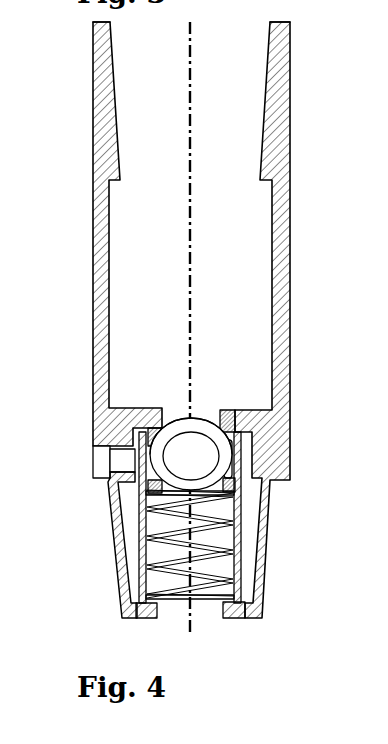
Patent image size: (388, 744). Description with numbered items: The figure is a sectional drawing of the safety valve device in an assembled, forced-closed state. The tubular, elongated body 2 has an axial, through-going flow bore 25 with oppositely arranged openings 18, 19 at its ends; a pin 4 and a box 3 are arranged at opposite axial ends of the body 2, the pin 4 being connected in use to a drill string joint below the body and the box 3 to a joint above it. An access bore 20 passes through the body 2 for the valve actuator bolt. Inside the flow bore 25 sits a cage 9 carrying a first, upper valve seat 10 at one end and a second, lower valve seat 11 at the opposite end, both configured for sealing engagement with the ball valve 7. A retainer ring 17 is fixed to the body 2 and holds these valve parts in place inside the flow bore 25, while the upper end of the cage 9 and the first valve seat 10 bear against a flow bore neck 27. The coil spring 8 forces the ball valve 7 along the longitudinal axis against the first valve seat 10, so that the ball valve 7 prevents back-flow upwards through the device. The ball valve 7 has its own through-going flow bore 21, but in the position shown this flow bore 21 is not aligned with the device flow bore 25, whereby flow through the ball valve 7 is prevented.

The body 2 is at (288, 162).
The box 3 is at (120, 137).
The pin 4 is at (85, 570).
The ball valve 7 is at (205, 423).
The coil spring 8 is at (217, 529).
The cage 9 is at (238, 571).
The first valve seat 10 is at (233, 423).
The second valve seat 11 is at (229, 489).
The retainer ring 17 is at (237, 619).
The opening 18 is at (173, 616).
The opening 19 is at (218, 37).
The access bore 20 is at (102, 457).
The flow bore 21 is at (177, 471).
The flow bore 25 is at (217, 293).
The flow bore neck 27 is at (160, 411).